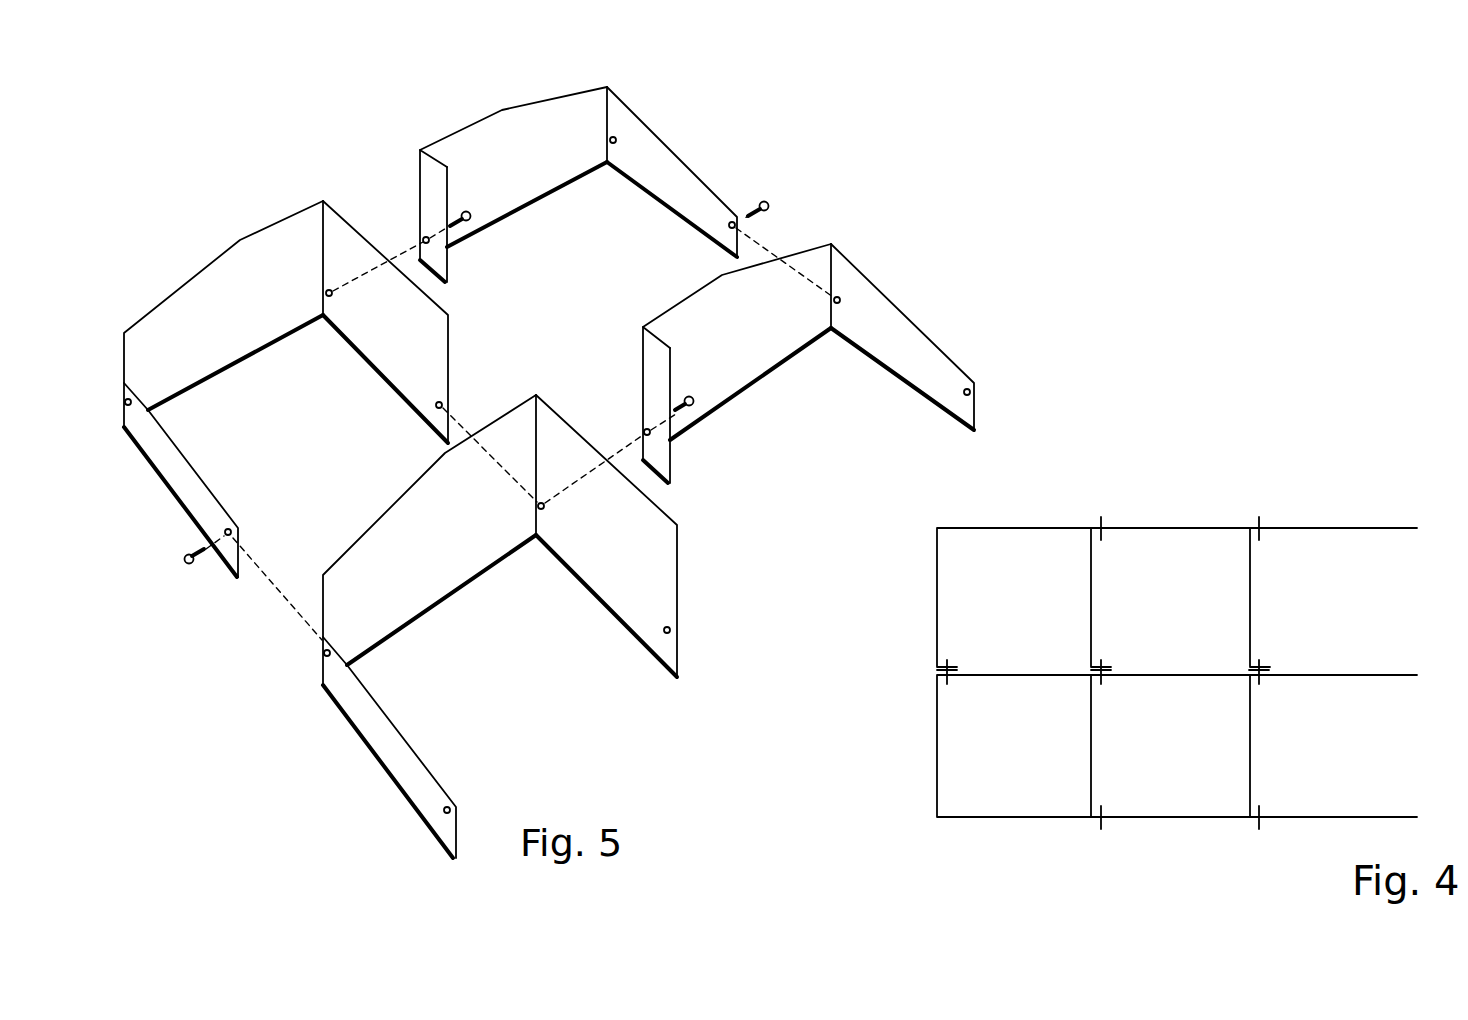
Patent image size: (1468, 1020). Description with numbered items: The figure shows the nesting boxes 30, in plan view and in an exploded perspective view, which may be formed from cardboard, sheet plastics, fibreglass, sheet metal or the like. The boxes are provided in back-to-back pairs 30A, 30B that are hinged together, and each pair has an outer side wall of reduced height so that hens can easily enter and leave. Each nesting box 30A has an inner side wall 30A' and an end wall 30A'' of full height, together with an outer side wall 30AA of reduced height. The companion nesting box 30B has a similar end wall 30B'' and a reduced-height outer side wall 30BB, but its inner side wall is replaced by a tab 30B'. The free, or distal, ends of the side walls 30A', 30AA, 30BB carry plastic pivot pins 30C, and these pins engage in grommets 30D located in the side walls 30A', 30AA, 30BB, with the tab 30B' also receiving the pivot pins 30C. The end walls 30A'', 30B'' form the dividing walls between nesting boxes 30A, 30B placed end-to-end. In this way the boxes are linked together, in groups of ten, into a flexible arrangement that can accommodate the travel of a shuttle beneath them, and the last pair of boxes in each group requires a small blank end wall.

In FIG. 4, the nesting boxes 30 is at (1198, 500).
In FIG. 5, the nesting box 30A is at (318, 372).
In FIG. 4, the nesting box 30A is at (1131, 746).
In FIG. 5, the inner side wall 30A' is at (424, 317).
In FIG. 5, the end wall 30A'' is at (223, 295).
In FIG. 5, the outer side wall 30AA is at (177, 473).
In FIG. 4, the nesting box 30B is at (1126, 597).
In FIG. 5, the tab 30B' is at (398, 183).
In FIG. 5, the end wall 30B'' is at (513, 139).
In FIG. 5, the outer side wall 30BB is at (712, 205).
In FIG. 5, the pivot pins 30C is at (462, 210).
In FIG. 5, the grommets 30D is at (672, 626).